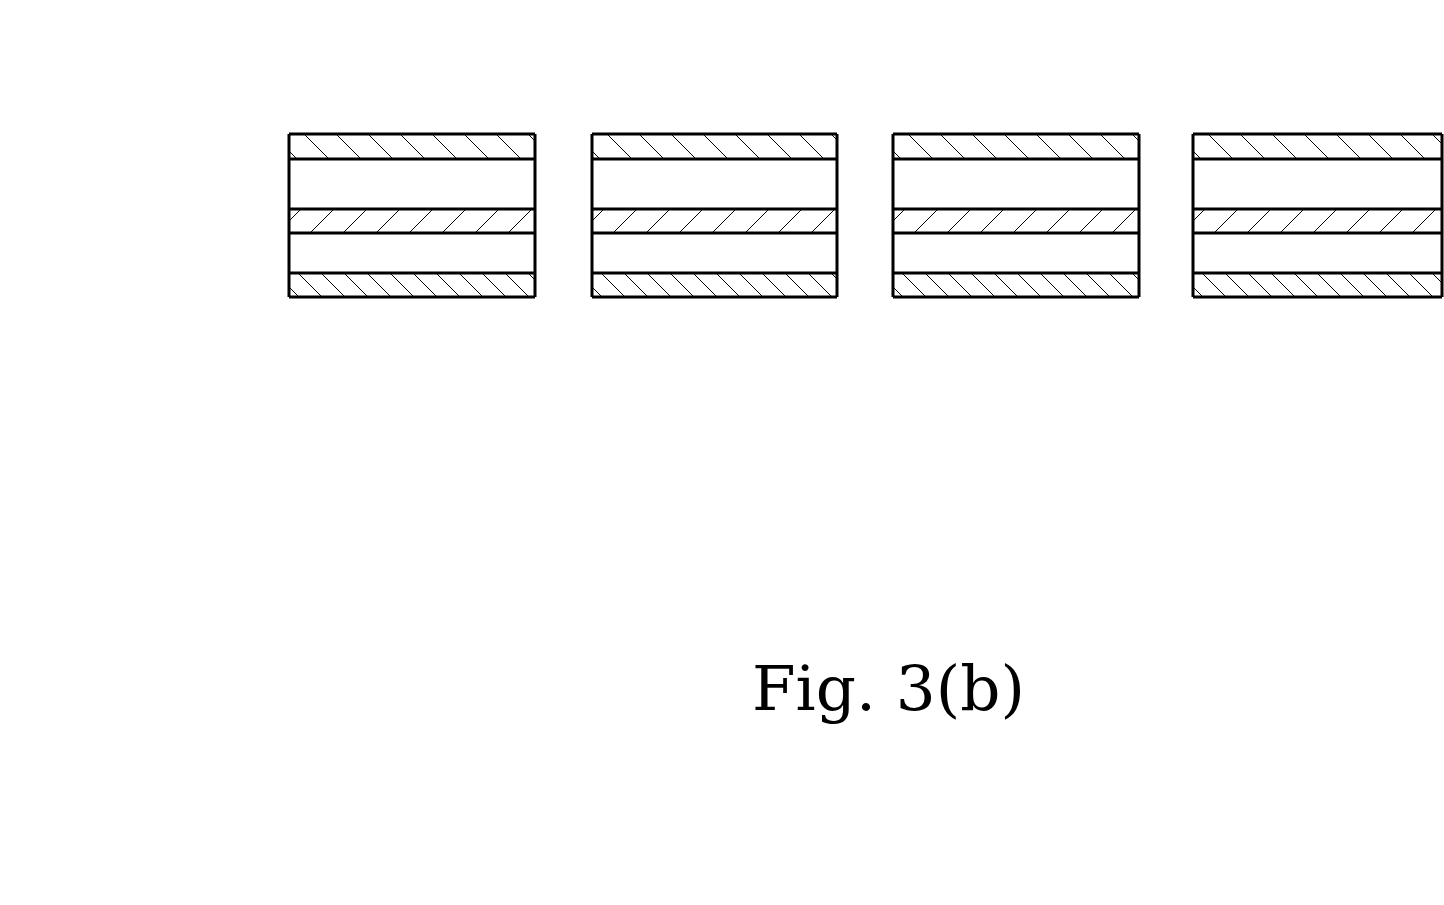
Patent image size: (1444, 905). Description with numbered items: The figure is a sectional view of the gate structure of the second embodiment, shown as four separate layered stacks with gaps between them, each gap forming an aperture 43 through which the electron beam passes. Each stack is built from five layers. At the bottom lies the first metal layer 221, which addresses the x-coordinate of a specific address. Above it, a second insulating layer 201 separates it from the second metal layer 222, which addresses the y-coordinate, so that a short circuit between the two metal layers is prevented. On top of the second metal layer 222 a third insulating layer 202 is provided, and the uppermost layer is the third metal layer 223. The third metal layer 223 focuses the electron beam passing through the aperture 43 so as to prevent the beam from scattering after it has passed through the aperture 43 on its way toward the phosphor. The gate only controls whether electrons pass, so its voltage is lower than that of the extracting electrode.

The third metal layer 223 is at (322, 148).
The third insulating layer 202 is at (345, 188).
The second metal layer 222 is at (342, 217).
The second insulating layer 201 is at (345, 262).
The first metal layer 221 is at (342, 280).
The aperture 43 is at (862, 147).